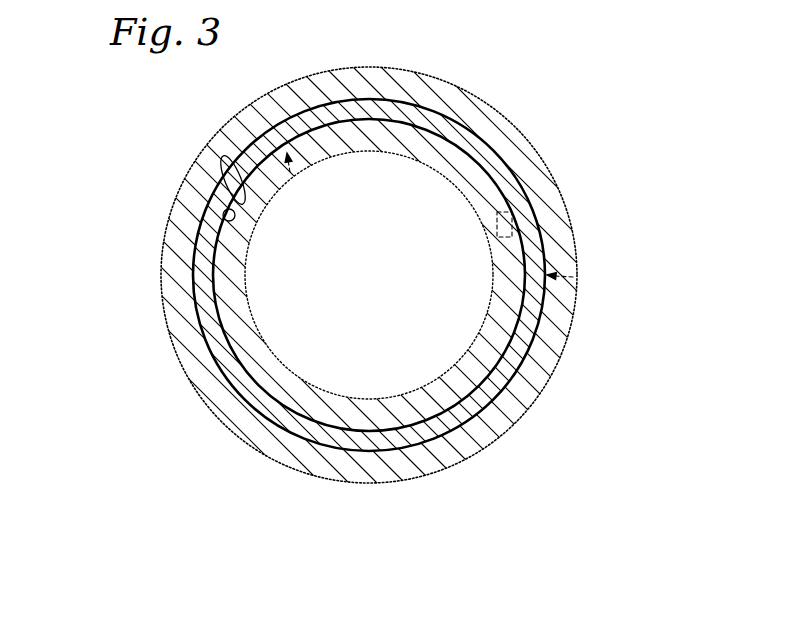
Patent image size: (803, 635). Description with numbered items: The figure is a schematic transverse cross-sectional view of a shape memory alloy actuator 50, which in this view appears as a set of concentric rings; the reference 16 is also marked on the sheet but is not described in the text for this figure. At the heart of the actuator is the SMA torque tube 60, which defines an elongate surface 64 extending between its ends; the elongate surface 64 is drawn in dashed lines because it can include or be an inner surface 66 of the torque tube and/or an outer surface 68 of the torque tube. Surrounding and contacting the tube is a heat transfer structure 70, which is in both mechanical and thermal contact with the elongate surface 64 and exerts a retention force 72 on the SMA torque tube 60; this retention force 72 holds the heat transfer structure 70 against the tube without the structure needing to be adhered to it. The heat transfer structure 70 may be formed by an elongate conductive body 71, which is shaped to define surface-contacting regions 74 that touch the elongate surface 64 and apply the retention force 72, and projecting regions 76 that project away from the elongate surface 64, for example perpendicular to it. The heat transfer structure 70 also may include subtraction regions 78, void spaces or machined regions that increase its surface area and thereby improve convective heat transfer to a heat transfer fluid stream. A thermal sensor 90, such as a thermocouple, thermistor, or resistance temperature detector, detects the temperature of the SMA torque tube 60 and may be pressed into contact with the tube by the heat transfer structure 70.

The bearing assembly 16 is at (570, 35).
The shape memory alloy actuator 50 is at (549, 77).
The SMA torque tube 60 is at (168, 245).
The elongate surface 64 is at (184, 290).
The inner surface 66 is at (223, 215).
The outer surface 68 is at (243, 203).
The heat transfer structure 70 is at (308, 377).
The elongate conductive body 71 is at (371, 420).
The retention force 72 is at (468, 376).
The surface-contacting regions 74 is at (288, 118).
The projecting regions 76 is at (369, 86).
The subtraction regions 78 is at (492, 337).
The thermal sensor 90 is at (512, 222).